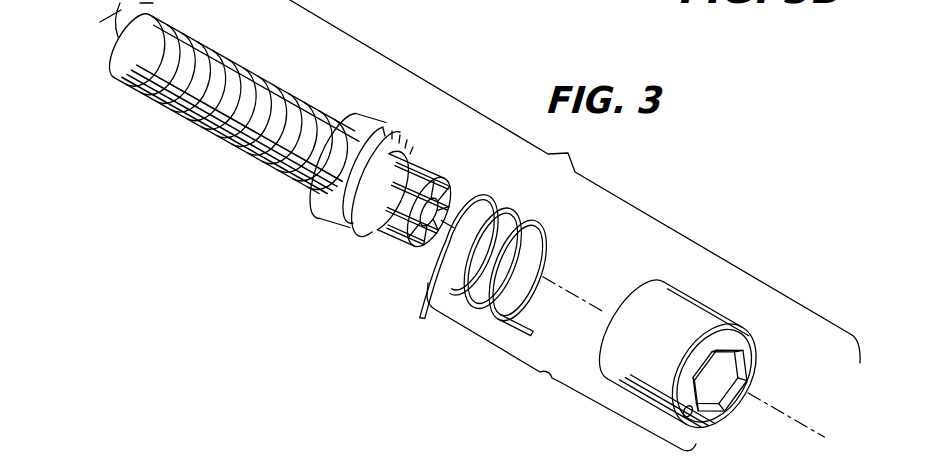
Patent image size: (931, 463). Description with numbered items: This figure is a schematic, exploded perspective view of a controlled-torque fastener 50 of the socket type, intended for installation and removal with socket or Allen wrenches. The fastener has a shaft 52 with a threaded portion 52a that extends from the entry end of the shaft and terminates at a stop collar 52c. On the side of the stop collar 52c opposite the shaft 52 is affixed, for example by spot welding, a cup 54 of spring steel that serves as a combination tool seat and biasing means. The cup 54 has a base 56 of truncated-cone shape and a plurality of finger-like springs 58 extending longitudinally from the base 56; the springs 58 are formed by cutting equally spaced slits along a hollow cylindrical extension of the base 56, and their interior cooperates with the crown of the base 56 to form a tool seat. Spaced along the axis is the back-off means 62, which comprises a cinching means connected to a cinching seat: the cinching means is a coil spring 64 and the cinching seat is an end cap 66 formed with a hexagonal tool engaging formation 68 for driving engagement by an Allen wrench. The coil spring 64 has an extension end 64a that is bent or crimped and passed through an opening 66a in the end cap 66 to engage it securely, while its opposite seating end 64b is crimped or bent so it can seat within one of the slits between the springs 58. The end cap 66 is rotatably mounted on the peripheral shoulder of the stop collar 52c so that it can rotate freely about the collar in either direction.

The controlled-torque fastener 50 is at (582, 142).
The shaft 52 is at (263, 166).
The threaded portion 52a is at (279, 62).
The stop collar 52c is at (330, 210).
The cup 54 is at (385, 228).
The base 56 is at (377, 114).
The finger-like springs 58 is at (414, 176).
The back-off means 62 is at (538, 383).
The coil spring 64 is at (482, 228).
The extension end 64a is at (593, 351).
The seating end 64b is at (443, 351).
The end cap 66 is at (693, 347).
The opening 66a is at (773, 450).
The tool engaging formation 68 is at (736, 389).